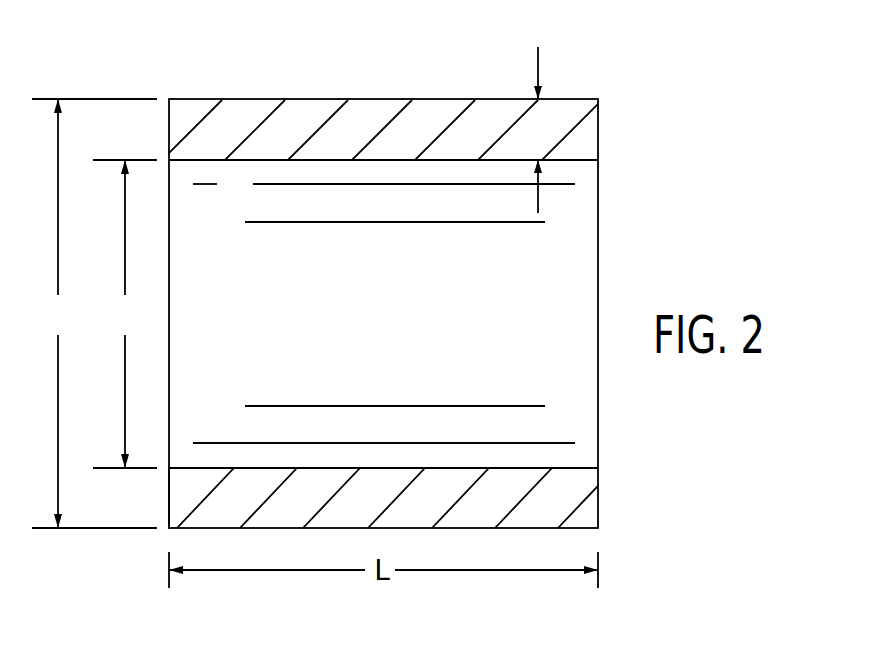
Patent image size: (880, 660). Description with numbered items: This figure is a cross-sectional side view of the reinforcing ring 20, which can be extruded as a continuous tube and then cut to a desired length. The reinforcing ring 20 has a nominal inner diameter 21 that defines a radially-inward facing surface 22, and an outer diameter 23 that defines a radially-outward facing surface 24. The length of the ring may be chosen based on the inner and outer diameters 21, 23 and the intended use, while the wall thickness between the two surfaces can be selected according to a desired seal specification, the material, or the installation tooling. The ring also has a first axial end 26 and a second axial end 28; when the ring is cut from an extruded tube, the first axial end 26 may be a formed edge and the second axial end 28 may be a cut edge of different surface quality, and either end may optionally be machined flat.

The reinforcing ring 20 is at (136, 48).
The nominal inner diameter 21 is at (125, 314).
The radially-inward facing surface 22 is at (328, 160).
The outer diameter 23 is at (94, 313).
The radially-outward facing surface 24 is at (385, 99).
The first axial end 26 is at (598, 498).
The second axial end 28 is at (168, 505).